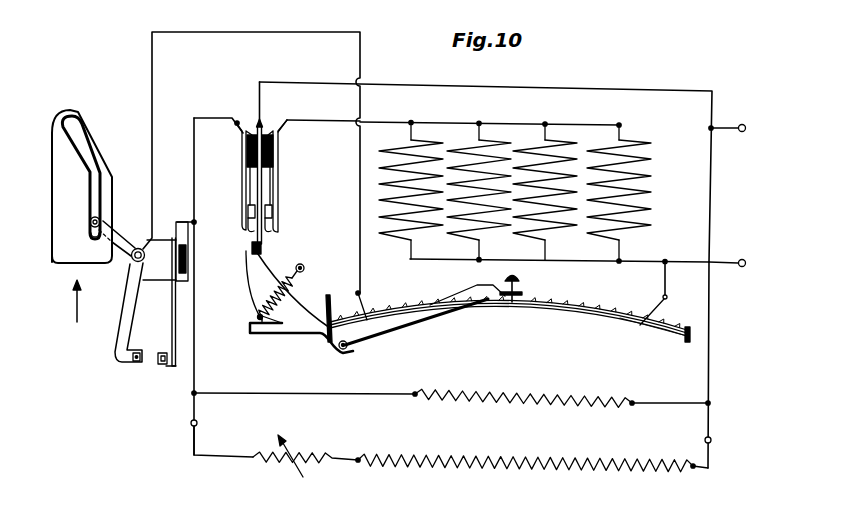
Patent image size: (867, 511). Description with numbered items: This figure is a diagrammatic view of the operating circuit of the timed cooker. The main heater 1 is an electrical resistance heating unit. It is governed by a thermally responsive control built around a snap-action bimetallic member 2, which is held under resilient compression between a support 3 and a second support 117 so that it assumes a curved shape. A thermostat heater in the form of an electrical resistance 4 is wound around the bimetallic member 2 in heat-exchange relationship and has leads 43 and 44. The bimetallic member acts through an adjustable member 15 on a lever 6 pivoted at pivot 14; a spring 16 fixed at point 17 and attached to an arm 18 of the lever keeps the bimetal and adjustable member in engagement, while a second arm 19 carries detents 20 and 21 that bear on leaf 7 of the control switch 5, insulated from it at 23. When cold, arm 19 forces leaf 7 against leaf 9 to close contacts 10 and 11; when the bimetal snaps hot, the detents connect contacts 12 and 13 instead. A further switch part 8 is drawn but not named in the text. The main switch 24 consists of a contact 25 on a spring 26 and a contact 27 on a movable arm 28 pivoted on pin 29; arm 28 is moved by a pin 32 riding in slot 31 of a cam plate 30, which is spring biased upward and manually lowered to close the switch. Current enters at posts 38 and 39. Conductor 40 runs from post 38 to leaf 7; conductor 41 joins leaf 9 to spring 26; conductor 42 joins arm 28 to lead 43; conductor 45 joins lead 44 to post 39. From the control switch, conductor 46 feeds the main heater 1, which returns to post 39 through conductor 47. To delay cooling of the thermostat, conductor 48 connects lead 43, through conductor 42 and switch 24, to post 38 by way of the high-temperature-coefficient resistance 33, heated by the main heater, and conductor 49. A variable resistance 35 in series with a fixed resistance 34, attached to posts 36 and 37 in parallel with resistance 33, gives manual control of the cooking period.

The main heater 1 is at (520, 138).
The bimetallic member 2 is at (670, 338).
The support 3 is at (688, 343).
The electrical resistance 4 is at (598, 305).
The control switch 5 is at (263, 130).
The lever 6 is at (410, 328).
The leaf 7 is at (263, 182).
The inner tube 8 is at (278, 193).
The leaf 9 is at (245, 178).
The contact 10 is at (248, 205).
The contact 11 is at (245, 218).
The contact 12 is at (273, 211).
The contact 13 is at (298, 176).
The pivot 14 is at (348, 349).
The adjustable member 15 is at (524, 282).
The spring 16 is at (262, 308).
The fixed point 17 is at (305, 266).
The support 117 is at (330, 302).
The arm 18 is at (275, 336).
The arm 19 is at (257, 276).
The detent 20 is at (289, 262).
The detent 21 is at (246, 266).
The insulation 23 is at (252, 243).
The main switch 24 is at (163, 281).
The contact 25 is at (162, 366).
The spring 26 is at (173, 318).
The contact 27 is at (136, 363).
The movable arm 28 is at (127, 290).
The pin 29 is at (145, 249).
The cam plate 30 is at (56, 197).
The slot 31 is at (83, 155).
The pin 32 is at (100, 220).
The electrical resistance 33 is at (563, 392).
The fixed resistance 34 is at (546, 456).
The variable resistance 35 is at (299, 448).
The post 36 is at (712, 440).
The post 37 is at (190, 423).
The post 38 is at (745, 124).
The post 39 is at (745, 260).
The conductor 40 is at (528, 85).
The conductor 41 is at (210, 116).
The conductor 42 is at (192, 34).
The lead 43 is at (362, 293).
The lead 44 is at (668, 298).
The conductor 45 is at (662, 279).
The conductor 46 is at (340, 119).
The conductor 47 is at (682, 258).
The conductor 48 is at (195, 333).
The conductor 49 is at (712, 222).